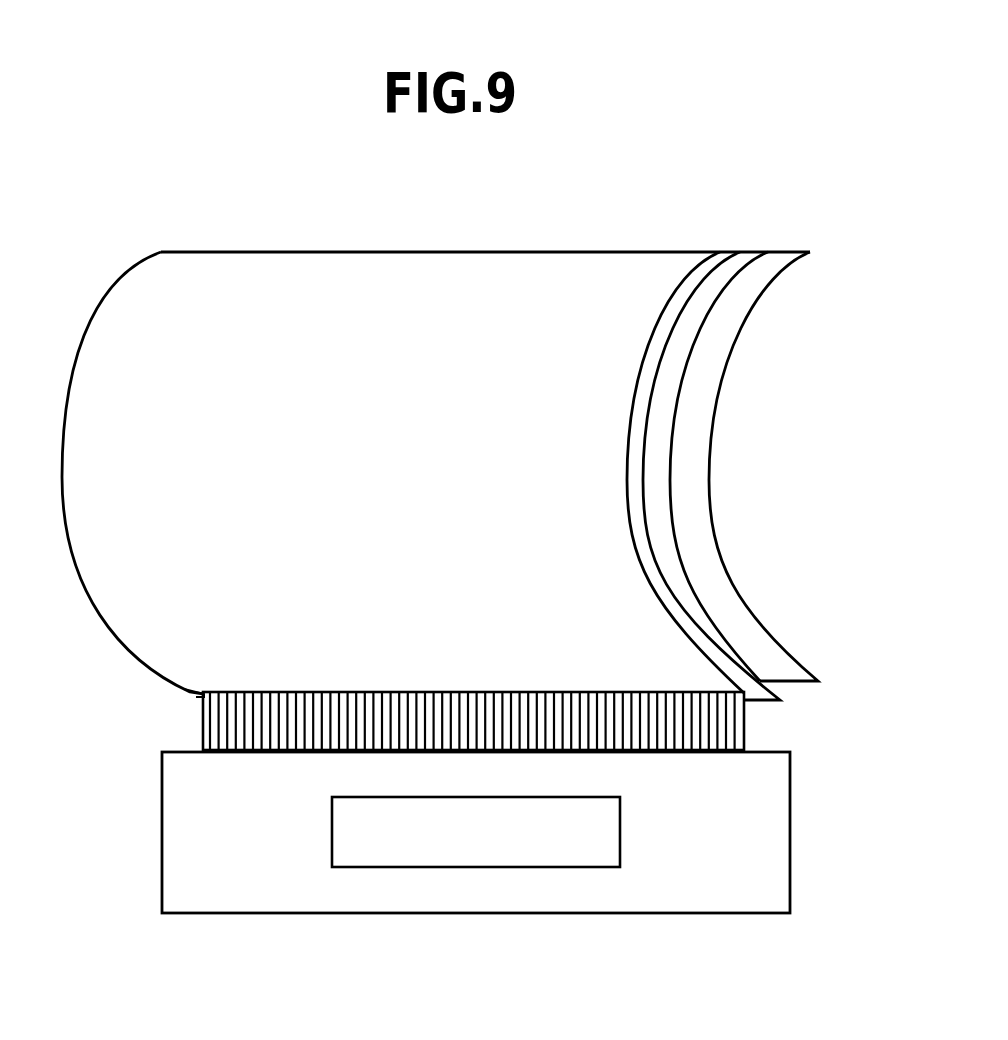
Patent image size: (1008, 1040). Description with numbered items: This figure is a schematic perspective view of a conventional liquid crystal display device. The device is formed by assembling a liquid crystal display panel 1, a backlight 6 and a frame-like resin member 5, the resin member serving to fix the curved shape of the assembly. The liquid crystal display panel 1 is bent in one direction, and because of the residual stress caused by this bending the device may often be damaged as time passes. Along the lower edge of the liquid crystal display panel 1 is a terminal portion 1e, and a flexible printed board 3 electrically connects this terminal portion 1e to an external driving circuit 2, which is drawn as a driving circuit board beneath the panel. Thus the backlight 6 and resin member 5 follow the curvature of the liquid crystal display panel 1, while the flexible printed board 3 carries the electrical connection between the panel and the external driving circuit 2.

The liquid crystal display panel 1 is at (422, 253).
The terminal portion 1e is at (200, 698).
The external driving circuit 2 is at (777, 825).
The flexible printed board 3 is at (730, 723).
The frame-like resin member 5 is at (663, 398).
The backlight 6 is at (702, 548).